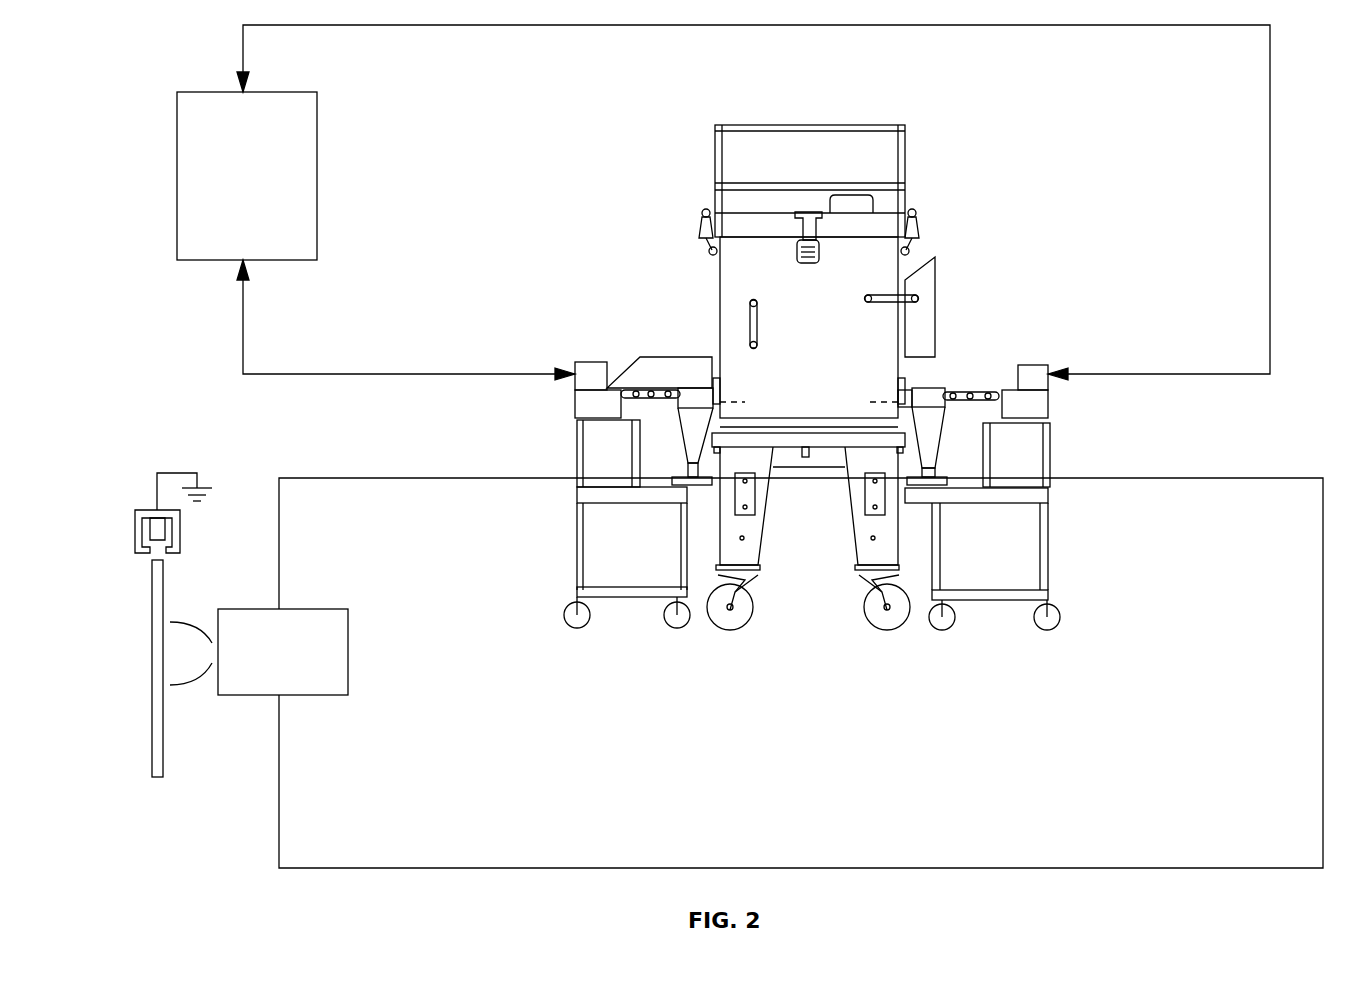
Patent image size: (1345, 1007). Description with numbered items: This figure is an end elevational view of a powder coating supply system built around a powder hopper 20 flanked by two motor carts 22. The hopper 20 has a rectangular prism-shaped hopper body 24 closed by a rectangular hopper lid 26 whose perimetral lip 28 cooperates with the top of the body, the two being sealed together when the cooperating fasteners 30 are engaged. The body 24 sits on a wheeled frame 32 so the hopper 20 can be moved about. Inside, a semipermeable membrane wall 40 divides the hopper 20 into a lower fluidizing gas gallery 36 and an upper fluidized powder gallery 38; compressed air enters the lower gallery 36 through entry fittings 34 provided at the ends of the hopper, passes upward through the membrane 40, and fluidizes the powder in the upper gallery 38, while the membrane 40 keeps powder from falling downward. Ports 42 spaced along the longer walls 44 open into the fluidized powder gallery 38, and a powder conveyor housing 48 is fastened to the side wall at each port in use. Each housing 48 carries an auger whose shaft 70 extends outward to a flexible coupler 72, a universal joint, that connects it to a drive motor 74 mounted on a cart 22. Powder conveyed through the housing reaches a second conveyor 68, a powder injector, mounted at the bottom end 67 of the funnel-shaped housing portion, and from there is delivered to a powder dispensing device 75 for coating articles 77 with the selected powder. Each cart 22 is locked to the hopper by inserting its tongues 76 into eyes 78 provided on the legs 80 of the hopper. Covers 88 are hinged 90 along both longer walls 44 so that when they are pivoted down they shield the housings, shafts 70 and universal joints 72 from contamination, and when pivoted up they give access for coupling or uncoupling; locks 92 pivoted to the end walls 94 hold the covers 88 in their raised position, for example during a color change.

The powder hopper 20 is at (480, 230).
The motor cart 22 is at (417, 525).
The hopper body 24 is at (905, 272).
The hopper lid 26 is at (866, 212).
The perimetral lip 28 is at (752, 238).
The cooperating fasteners 30 is at (806, 212).
The wheeled frame 32 is at (690, 645).
The fluidizing gas entry fitting 34 is at (805, 445).
The fluidizing gas gallery 36 is at (807, 485).
The fluidized powder gallery 38 is at (880, 330).
The semipermeable membrane wall 40 is at (833, 425).
The port 42 is at (809, 403).
The longer wall 44 is at (720, 283).
The powder conveyor housing 48 is at (655, 425).
The bottom end 67 is at (690, 470).
The second conveyor 68 is at (680, 483).
The shaft 70 is at (655, 385).
The flexible coupler 72 is at (637, 383).
The drive motor 74 is at (605, 395).
The powder dispensing device 75 is at (310, 695).
The tongue 76 is at (690, 503).
The article 77 is at (175, 730).
The eye 78 is at (748, 497).
The leg 80 is at (870, 540).
The cover 88 is at (680, 362).
The hinge 90 is at (720, 358).
The lock 92 is at (757, 318).
The end wall 94 is at (824, 345).